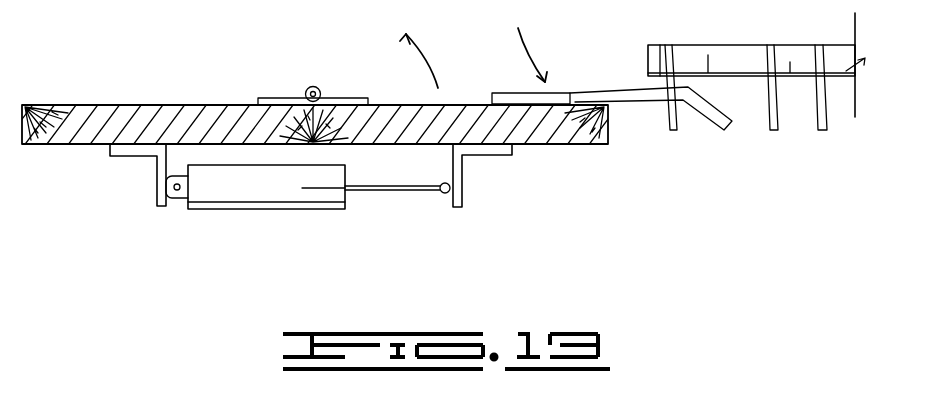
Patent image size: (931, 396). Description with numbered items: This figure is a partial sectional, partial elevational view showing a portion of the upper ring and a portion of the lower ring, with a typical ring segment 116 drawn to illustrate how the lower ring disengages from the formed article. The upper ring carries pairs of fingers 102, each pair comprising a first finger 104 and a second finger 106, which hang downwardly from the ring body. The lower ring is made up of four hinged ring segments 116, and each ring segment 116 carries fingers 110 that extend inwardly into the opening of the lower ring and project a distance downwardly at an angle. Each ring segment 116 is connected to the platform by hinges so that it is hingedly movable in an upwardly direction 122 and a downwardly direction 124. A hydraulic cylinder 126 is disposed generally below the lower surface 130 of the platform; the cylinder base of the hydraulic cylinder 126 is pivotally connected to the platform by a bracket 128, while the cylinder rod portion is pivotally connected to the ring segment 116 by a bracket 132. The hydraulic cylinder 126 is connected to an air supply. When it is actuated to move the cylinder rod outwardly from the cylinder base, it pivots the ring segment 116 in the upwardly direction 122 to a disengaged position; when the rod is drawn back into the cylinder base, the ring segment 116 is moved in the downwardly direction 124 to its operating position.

The pairs of fingers 102 is at (798, 100).
The first finger 104 is at (673, 131).
The second finger 106 is at (823, 131).
The finger 110 is at (629, 87).
The ring segment 116 is at (402, 113).
The upwardly direction 122 is at (424, 60).
The downwardly direction 124 is at (530, 48).
The hydraulic cylinder 126 is at (247, 195).
The bracket 128 is at (162, 175).
The lower surface 130 is at (93, 146).
The bracket 132 is at (460, 187).